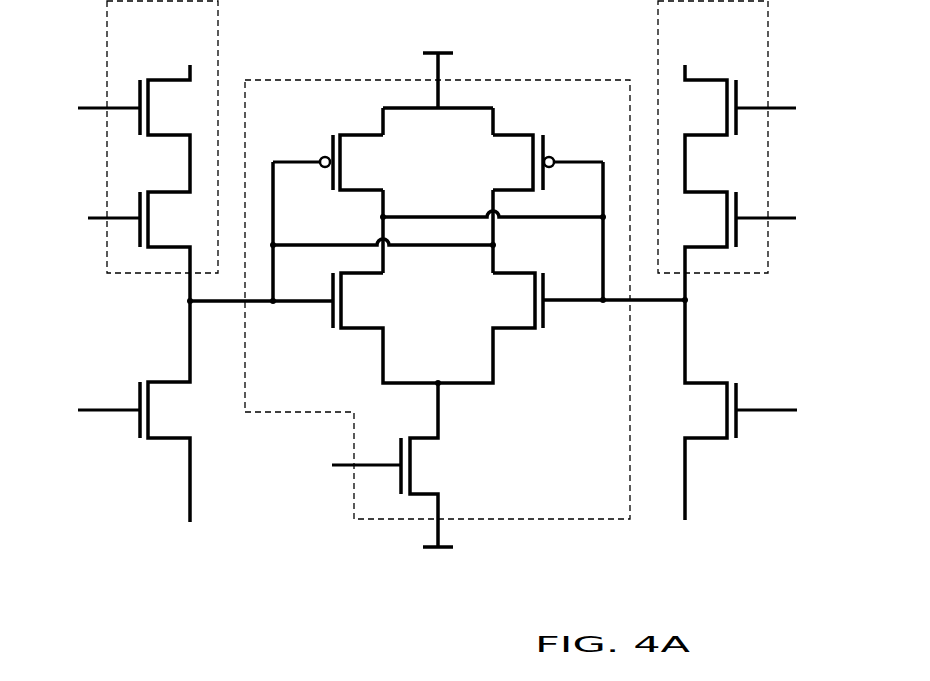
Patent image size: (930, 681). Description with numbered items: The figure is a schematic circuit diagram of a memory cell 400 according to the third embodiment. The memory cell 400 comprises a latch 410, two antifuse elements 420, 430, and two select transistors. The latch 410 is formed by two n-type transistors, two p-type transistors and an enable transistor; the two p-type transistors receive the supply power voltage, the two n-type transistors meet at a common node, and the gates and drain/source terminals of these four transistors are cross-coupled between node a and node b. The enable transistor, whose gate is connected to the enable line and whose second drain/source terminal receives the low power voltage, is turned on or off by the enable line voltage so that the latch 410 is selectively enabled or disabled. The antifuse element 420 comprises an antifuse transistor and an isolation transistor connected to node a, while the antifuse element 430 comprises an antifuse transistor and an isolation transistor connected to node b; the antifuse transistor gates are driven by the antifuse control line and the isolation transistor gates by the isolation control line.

The memory cell 400 is at (121, 536).
The latch 410 is at (604, 506).
The antifuse element 420 is at (190, 37).
The antifuse element 430 is at (733, 37).